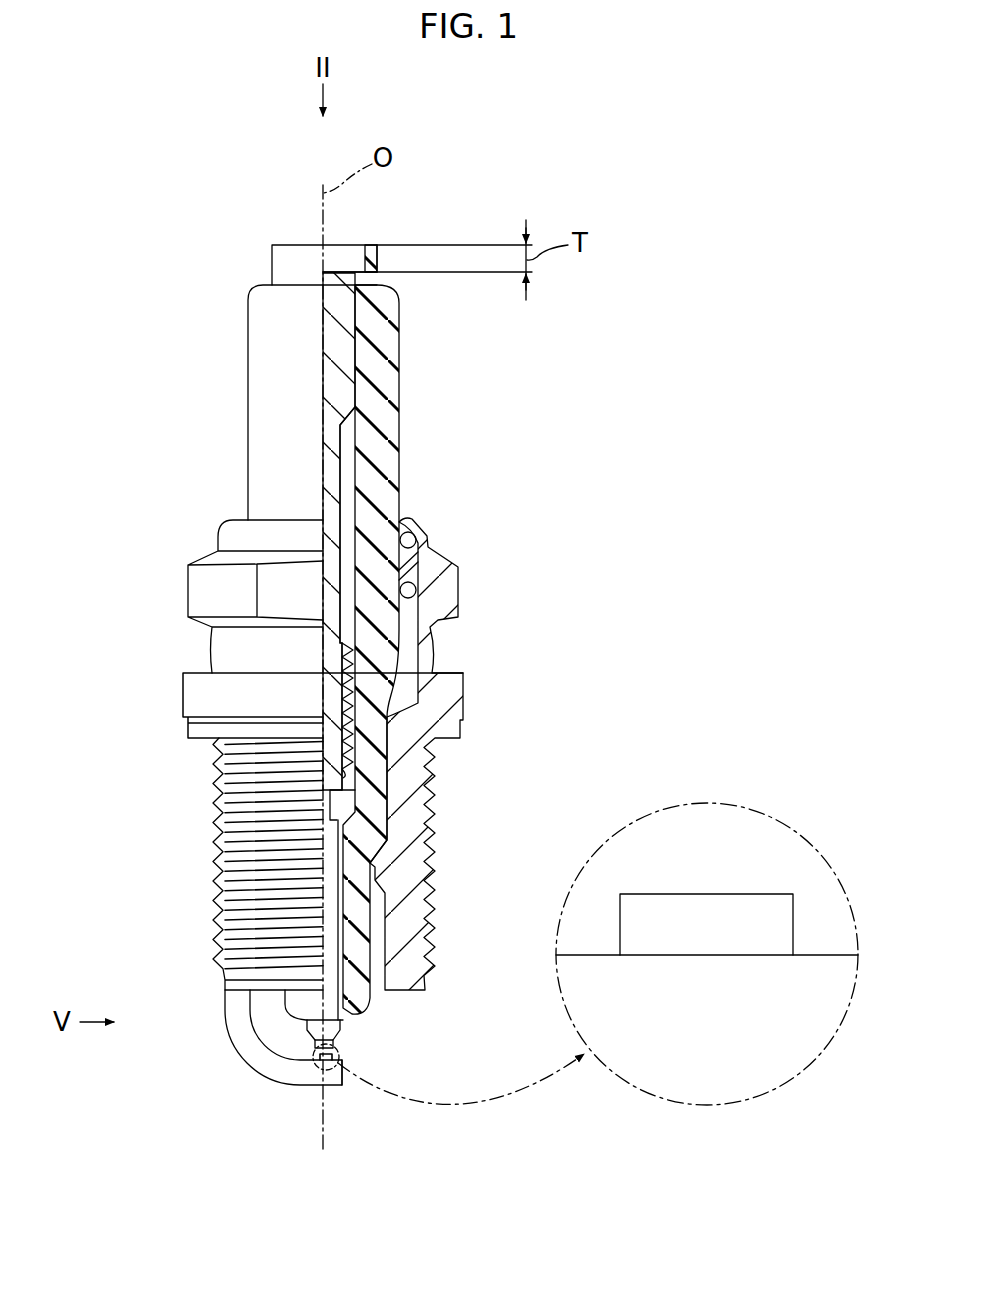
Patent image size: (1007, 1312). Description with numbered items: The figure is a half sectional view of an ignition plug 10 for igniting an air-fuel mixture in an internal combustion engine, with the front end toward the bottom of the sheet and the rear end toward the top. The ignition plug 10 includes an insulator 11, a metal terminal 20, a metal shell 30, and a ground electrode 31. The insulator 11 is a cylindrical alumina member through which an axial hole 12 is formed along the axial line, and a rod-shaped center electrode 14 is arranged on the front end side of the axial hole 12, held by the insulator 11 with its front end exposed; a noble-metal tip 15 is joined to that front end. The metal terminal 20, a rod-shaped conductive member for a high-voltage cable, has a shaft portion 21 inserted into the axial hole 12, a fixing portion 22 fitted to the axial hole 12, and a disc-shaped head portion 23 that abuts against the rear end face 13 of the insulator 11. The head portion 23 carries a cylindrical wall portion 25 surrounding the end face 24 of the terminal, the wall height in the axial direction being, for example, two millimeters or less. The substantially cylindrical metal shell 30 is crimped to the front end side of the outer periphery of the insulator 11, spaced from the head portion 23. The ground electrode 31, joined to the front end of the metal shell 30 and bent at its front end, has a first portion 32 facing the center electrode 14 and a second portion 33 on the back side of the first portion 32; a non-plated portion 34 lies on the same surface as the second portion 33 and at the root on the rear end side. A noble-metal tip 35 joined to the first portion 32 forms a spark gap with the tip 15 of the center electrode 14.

The ignition plug 10 is at (494, 166).
The insulator 11 is at (390, 468).
The axial hole 12 is at (352, 318).
The rear end face 13 is at (265, 285).
The center electrode 14 is at (338, 1018).
The tip 15 is at (333, 1043).
The metal terminal 20 is at (265, 211).
The shaft portion 21 is at (330, 442).
The fixing portion 22 is at (343, 393).
The head portion 23 is at (363, 281).
The end face 24 is at (347, 270).
The wall portion 25 is at (367, 247).
The metal shell 30 is at (202, 695).
The ground electrode 31 is at (255, 1084).
The first portion 32 is at (808, 954).
The second portion 33 is at (338, 1086).
The non-plated portion 34 is at (224, 1012).
The tip 35 is at (703, 907).